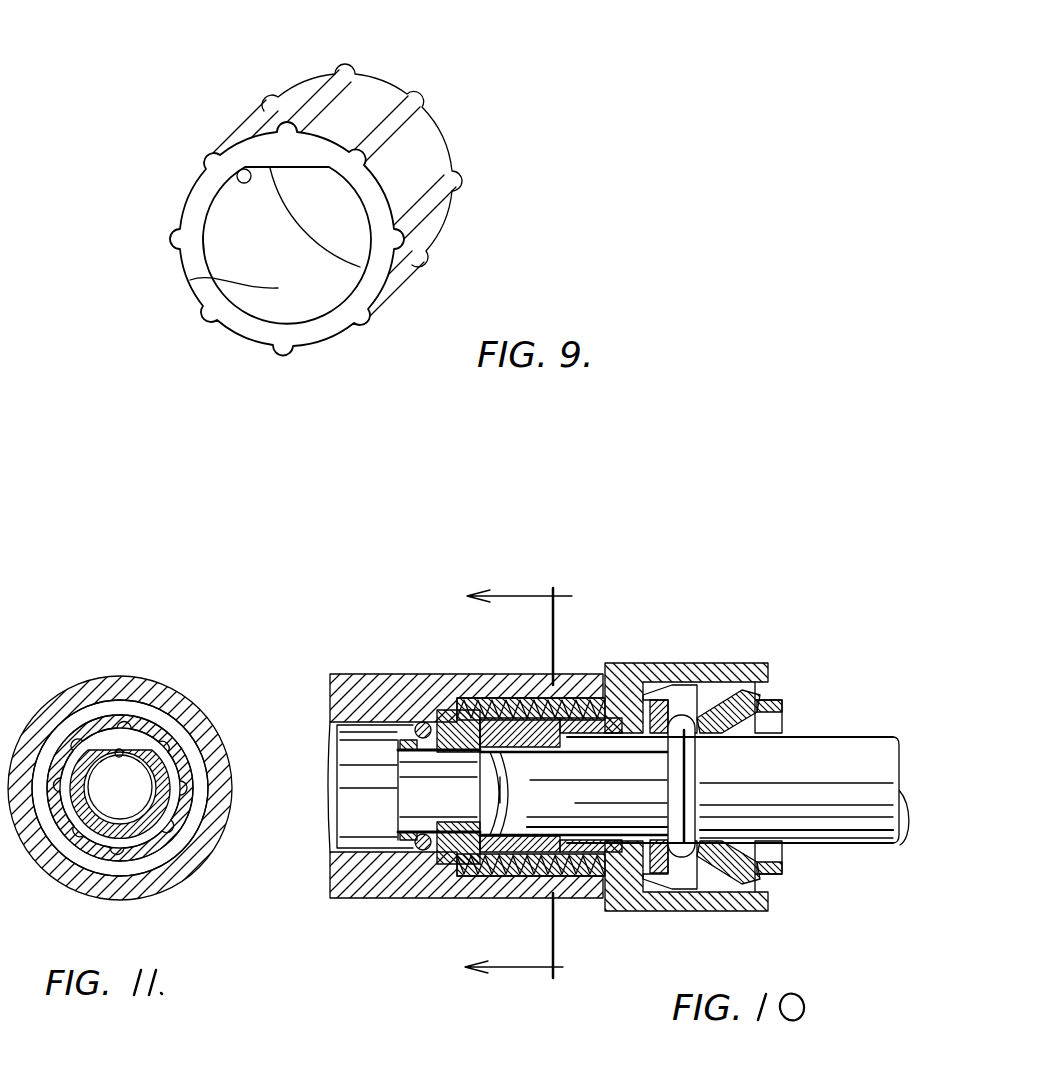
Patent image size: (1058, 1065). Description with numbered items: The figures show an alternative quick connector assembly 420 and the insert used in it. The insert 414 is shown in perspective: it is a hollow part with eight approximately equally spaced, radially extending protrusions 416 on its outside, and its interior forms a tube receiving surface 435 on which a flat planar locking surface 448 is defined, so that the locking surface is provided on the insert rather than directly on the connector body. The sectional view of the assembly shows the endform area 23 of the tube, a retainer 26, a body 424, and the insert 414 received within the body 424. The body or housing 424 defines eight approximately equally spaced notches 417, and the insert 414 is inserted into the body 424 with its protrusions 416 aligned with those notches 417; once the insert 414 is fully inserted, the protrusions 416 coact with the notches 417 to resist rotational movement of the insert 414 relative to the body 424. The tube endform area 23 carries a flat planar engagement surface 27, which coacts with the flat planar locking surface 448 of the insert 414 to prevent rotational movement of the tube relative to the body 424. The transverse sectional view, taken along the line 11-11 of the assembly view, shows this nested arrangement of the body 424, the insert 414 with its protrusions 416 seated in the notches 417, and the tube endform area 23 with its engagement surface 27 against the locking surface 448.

In FIG. 9, the insert 414 is at (484, 62).
In FIG. 11, the insert 414 is at (137, 743).
In FIG. 10, the insert 414 is at (490, 703).
In FIG. 9, the protrusions 416 is at (340, 75).
In FIG. 11, the protrusions 416 is at (187, 737).
In FIG. 9, the flat planar locking surface 448 is at (235, 172).
In FIG. 11, the flat planar locking surface 448 is at (119, 752).
In FIG. 9, the tube receiving surface 435 is at (219, 275).
In FIG. 10, the tube receiving surface 435 is at (506, 757).
In FIG. 11, the notches 417 is at (125, 707).
In FIG. 11, the flat planar engagement surface 27 is at (92, 710).
In FIG. 10, the flat planar engagement surface 27 is at (554, 693).
In FIG. 11, the endform area 23 is at (200, 837).
In FIG. 10, the endform area 23 is at (598, 755).
In FIG. 10, the body 424 is at (584, 697).
In FIG. 10, the retainer 26 is at (734, 697).
In FIG. 10, the quick connector assembly 420 is at (679, 645).
In FIG. 10, the line 11- 11 is at (475, 997).